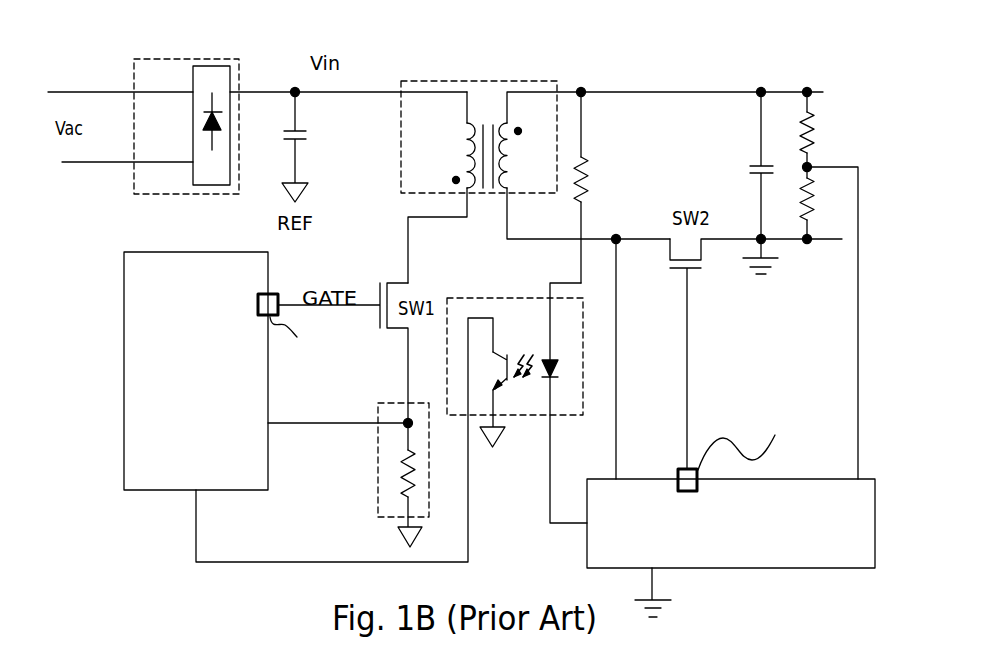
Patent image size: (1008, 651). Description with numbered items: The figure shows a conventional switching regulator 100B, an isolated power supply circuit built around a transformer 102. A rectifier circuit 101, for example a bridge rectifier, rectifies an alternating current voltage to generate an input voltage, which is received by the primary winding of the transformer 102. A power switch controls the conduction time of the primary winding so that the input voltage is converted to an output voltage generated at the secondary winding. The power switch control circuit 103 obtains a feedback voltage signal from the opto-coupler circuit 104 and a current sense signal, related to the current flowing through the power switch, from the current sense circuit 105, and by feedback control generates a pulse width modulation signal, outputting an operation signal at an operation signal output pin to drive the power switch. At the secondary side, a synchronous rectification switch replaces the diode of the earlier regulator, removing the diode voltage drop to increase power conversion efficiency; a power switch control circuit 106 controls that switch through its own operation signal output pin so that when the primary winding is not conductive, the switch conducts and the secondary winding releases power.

The switching regulator 100B is at (816, 66).
The rectifier circuit 101 is at (168, 186).
The transformer 102 is at (497, 81).
The power switch control circuit 103 is at (167, 281).
The opto-coupler circuit 104 is at (538, 415).
The current sense circuit 105 is at (378, 505).
The power switch control circuit 106 is at (862, 560).